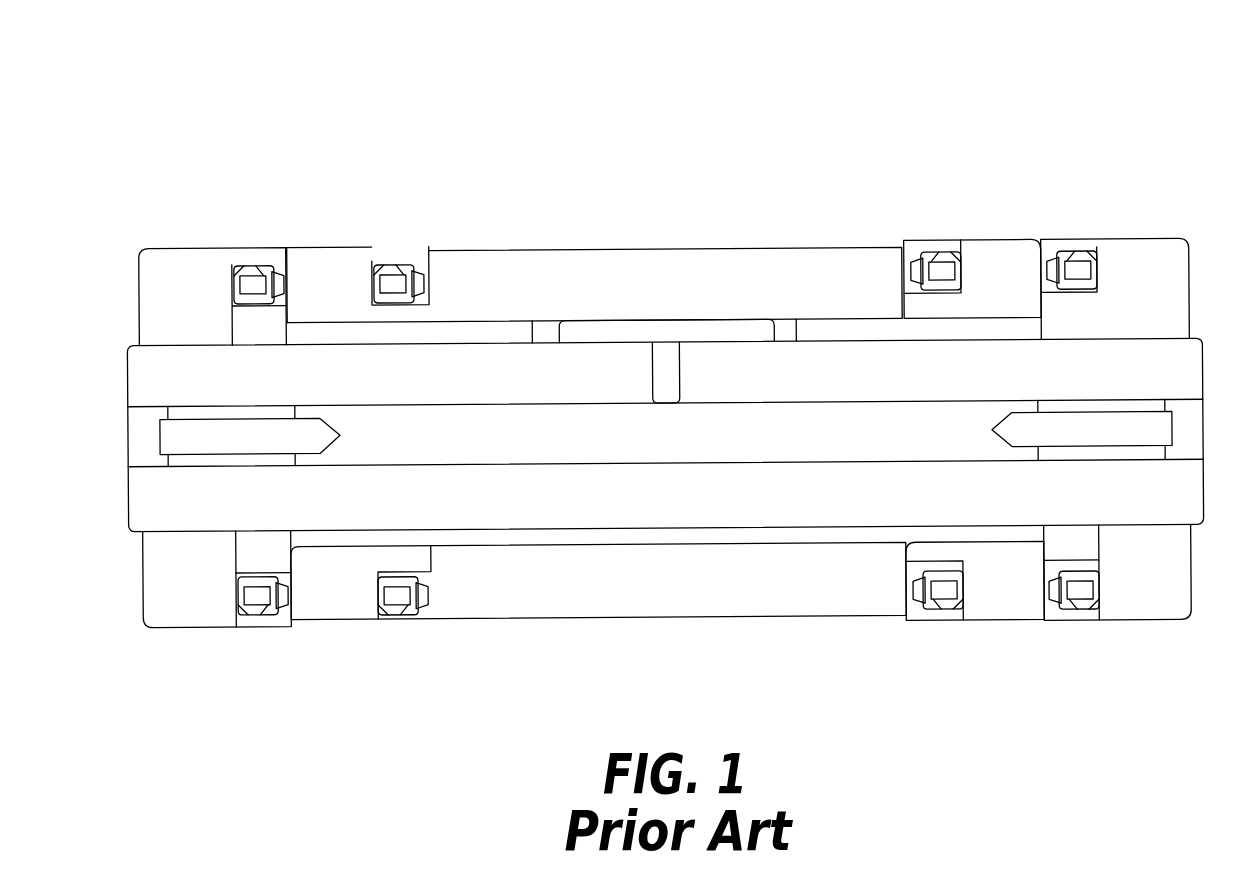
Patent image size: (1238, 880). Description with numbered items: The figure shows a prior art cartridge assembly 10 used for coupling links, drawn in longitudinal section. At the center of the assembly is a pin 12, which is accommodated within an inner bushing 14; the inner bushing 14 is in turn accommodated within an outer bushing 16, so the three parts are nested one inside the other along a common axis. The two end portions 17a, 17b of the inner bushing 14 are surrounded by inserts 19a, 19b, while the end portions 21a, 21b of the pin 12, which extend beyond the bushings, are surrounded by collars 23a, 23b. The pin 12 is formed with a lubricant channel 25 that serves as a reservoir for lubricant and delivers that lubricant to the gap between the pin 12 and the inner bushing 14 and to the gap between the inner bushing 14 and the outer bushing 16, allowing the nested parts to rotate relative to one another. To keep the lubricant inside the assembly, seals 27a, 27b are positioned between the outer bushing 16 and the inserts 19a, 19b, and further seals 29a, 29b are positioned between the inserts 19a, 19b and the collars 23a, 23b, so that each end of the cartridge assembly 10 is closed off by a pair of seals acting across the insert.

The cartridge assembly 10 is at (860, 99).
The pin 12 is at (142, 380).
The inner bushing 14 is at (300, 335).
The outer bushing 16 is at (543, 270).
The end portion of inner bushing 17a is at (327, 321).
The end portion of inner bushing 17b is at (966, 318).
The insert 19a is at (353, 263).
The insert 19b is at (1023, 257).
The end portion of pin 21a is at (188, 530).
The end portion of pin 21b is at (1127, 529).
The collar 23a is at (164, 608).
The collar 23b is at (1172, 592).
The lubricant channel 25 is at (614, 438).
The seal 27a is at (387, 272).
The seal 27b is at (940, 268).
The seal 29a is at (254, 600).
The seal 29b is at (1083, 592).